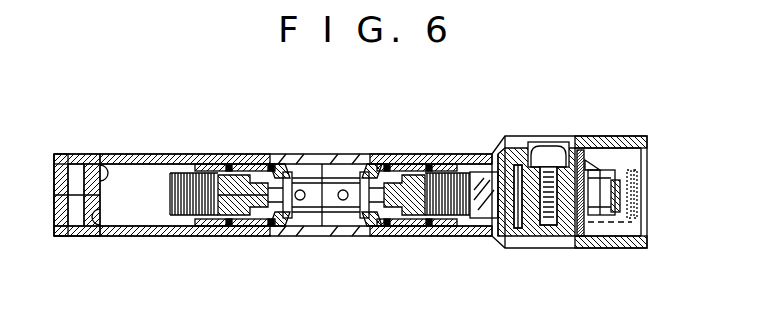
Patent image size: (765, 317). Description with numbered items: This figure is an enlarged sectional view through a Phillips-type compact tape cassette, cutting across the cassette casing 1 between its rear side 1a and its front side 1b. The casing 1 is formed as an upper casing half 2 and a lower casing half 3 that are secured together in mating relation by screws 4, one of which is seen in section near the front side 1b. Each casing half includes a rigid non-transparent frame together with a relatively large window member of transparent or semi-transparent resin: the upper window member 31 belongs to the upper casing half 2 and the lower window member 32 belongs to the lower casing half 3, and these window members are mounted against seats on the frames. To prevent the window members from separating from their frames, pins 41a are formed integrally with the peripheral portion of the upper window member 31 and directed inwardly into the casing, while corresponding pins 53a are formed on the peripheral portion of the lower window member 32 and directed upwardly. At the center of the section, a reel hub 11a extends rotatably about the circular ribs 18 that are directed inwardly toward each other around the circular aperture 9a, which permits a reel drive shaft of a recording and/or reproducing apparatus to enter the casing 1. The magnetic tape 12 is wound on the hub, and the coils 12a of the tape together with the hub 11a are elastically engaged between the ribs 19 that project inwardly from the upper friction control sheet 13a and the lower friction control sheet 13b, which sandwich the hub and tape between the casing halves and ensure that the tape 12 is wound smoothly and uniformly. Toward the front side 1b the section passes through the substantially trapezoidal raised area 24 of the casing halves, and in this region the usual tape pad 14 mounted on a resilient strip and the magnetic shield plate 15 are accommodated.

The cassette casing 1 is at (383, 150).
The rear side of the casing 1a is at (54, 199).
The front side of the casing 1b is at (648, 180).
The upper casing half 2 is at (65, 154).
The lower casing half 3 is at (62, 236).
The screws 4 is at (548, 146).
The circular aperture 9a is at (282, 168).
The reel hub 11a is at (318, 186).
The magnetic tape 12 is at (478, 180).
The coils of magnetic tape 12a is at (455, 215).
The upper friction control sheet 13a is at (228, 176).
The lower friction control sheet 13b is at (222, 216).
The tape pad 14 is at (620, 176).
The magnetic shield plate 15 is at (587, 224).
The circular ribs 18 is at (370, 166).
The ribs of the friction control sheets 19 is at (231, 166).
The raised trapezoidal area 24 is at (592, 148).
The upper window member 31 is at (160, 158).
The lower window member 32 is at (158, 230).
The pins of upper window member 41a is at (108, 172).
The pins of lower window member 53a is at (110, 218).